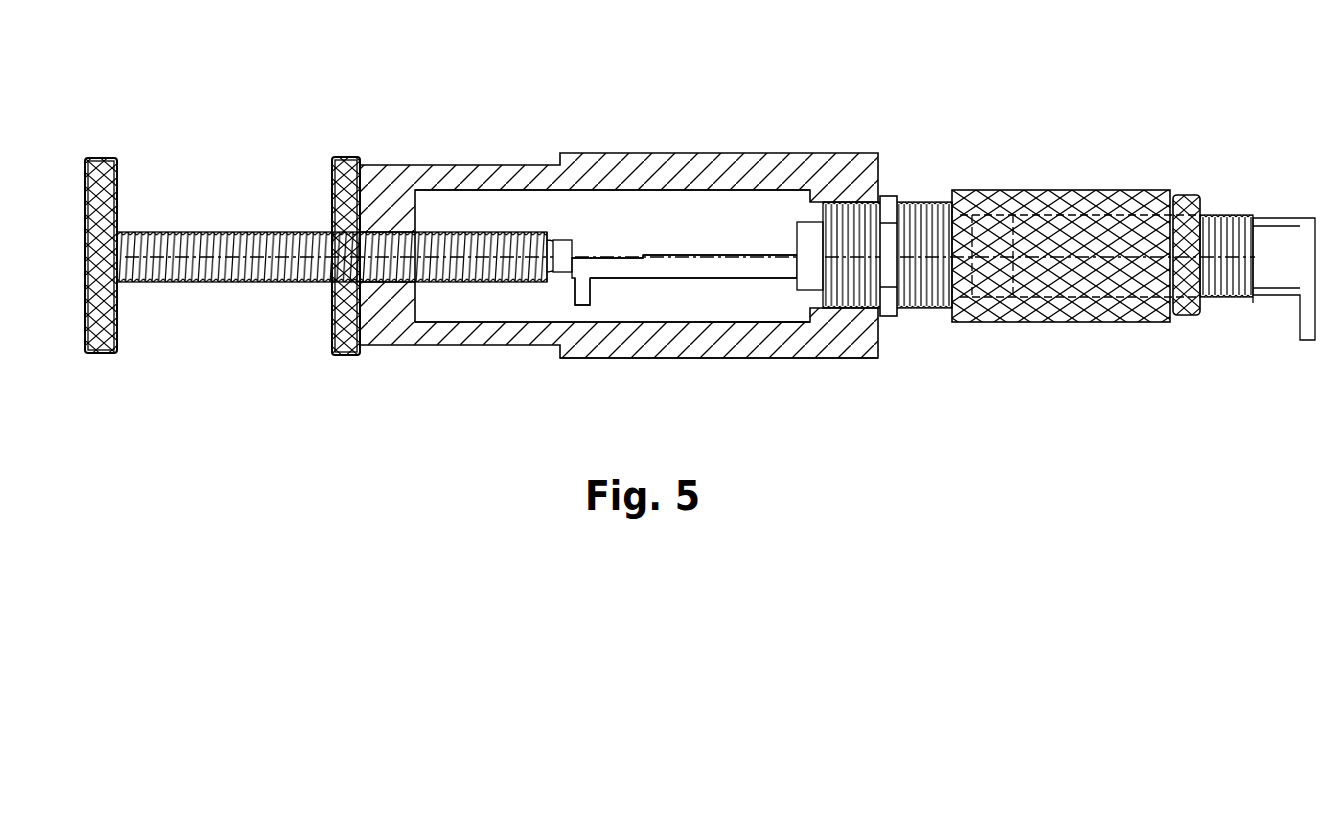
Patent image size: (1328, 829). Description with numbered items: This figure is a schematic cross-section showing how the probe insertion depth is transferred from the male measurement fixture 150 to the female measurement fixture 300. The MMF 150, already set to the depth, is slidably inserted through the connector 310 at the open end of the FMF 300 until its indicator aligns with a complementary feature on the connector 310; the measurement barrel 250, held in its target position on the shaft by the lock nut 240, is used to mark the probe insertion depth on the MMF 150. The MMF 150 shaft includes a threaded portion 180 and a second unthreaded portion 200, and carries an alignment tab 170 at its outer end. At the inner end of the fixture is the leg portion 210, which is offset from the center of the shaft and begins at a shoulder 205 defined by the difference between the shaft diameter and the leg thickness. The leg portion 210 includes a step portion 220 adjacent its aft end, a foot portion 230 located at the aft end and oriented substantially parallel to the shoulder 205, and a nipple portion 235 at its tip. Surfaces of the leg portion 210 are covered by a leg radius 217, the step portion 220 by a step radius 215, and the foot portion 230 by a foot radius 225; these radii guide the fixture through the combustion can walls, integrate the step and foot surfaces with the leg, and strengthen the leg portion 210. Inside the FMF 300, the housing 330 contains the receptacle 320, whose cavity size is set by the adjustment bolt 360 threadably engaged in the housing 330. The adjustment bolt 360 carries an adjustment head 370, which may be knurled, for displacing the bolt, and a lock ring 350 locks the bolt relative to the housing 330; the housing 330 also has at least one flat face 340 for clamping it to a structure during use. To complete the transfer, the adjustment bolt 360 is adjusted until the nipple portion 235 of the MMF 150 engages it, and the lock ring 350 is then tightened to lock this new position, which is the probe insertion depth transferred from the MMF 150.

The male measurement fixture 150 is at (1075, 140).
The alignment tab 170 is at (1308, 340).
The threaded portion 180 is at (1230, 208).
The second unthreaded portion 200 is at (1253, 303).
The shoulder 205 is at (737, 310).
The leg portion 210 is at (740, 252).
The step radius 215 is at (677, 226).
The leg radius 217 is at (718, 242).
The step portion 220 is at (597, 256).
The foot radius 225 is at (677, 304).
The foot portion 230 is at (592, 298).
The nipple portion 235 is at (558, 245).
The lock nut 240 is at (1187, 315).
The measurement barrel 250 is at (1048, 325).
The female measurement fixture 300 is at (682, 72).
The connector 310 is at (907, 317).
The receptacle 320 is at (797, 292).
The housing 330 is at (580, 337).
The flat face 340 is at (432, 163).
The lock ring 350 is at (345, 355).
The adjustment bolt 360 is at (162, 290).
The adjustment head 370 is at (102, 355).